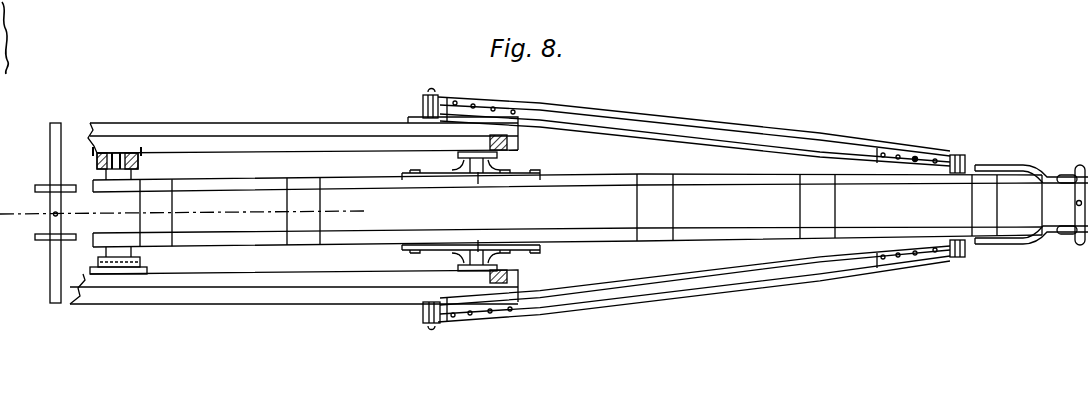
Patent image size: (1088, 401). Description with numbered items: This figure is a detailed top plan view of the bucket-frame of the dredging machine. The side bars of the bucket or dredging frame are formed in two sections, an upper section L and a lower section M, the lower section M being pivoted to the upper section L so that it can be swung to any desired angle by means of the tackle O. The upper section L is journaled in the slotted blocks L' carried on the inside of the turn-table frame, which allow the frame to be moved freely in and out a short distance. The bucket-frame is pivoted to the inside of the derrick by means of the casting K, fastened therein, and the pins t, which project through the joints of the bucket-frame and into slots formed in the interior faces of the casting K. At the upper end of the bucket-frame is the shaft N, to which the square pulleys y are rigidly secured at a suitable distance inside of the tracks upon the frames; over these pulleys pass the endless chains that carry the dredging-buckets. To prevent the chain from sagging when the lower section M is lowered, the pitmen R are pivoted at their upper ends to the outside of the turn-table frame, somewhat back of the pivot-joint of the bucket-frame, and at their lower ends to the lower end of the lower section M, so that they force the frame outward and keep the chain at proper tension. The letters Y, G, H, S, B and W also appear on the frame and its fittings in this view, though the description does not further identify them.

The shaft N is at (66, 213).
The collars on shaft Y is at (47, 216).
The upper section of bucket-frame L is at (590, 206).
The slotted blocks L' is at (129, 203).
The side beams G is at (294, 210).
The side beam plates H is at (304, 218).
The tackle O is at (509, 143).
The casting K is at (471, 210).
The pins t is at (462, 161).
The bolt S is at (475, 188).
The bolt B is at (474, 234).
The web W is at (430, 194).
The square pulleys y is at (187, 209).
The pitmen R is at (694, 209).
The lower section of bucket-frame M is at (870, 178).